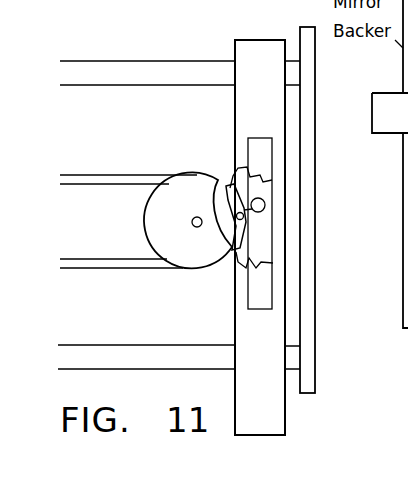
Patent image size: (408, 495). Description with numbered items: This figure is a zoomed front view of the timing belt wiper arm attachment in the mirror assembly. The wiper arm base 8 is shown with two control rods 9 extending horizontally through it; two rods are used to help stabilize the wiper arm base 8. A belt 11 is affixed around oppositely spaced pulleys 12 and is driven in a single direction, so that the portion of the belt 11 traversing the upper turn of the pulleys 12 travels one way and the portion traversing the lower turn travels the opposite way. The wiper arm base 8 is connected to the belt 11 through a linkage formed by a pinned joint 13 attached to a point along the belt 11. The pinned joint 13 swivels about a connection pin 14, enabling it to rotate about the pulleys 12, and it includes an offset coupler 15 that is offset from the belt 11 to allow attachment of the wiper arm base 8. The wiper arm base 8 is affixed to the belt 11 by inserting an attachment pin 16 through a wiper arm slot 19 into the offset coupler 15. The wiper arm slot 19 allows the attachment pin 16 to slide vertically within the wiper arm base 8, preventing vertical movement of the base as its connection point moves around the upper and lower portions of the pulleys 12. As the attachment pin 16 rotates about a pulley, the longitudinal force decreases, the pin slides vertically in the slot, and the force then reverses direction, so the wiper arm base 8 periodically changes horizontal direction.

The wiper arm base 8 is at (245, 40).
The control rods 9 is at (148, 61).
The belt 11 is at (103, 176).
The pulleys 12 is at (192, 174).
The pinned joint 13 is at (243, 238).
The connection pin 14 is at (244, 216).
The offset coupler 15 is at (233, 178).
The attachment pin 16 is at (265, 200).
The wiper arm slot 19 is at (255, 150).